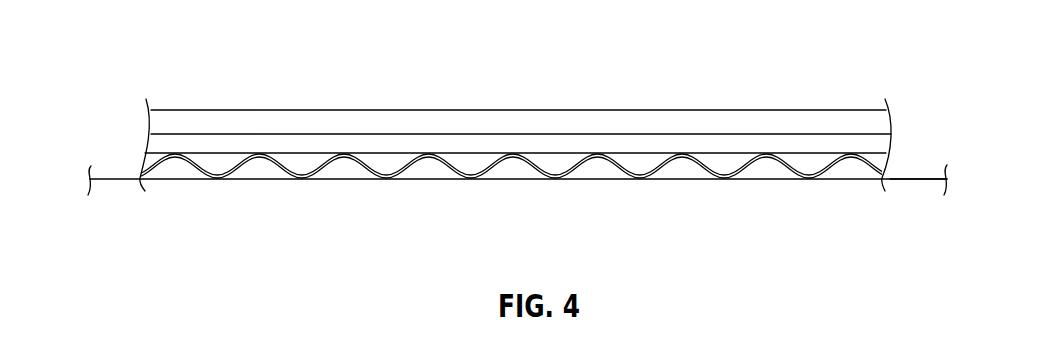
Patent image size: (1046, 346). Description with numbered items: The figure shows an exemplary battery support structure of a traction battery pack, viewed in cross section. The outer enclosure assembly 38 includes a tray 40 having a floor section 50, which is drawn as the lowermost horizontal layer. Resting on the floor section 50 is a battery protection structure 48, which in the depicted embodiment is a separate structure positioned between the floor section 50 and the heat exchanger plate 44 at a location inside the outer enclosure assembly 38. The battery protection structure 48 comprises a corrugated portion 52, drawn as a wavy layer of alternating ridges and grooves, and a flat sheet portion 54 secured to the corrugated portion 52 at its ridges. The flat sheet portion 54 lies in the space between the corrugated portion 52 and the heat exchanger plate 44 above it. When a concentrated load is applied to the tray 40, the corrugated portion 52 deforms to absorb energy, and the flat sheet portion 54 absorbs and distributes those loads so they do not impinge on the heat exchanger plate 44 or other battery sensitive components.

The outer enclosure assembly 38 is at (298, 221).
The tray 40 is at (108, 182).
The heat exchanger plate 44 is at (515, 112).
The battery protection structure 48 is at (118, 154).
The floor section 50 is at (910, 178).
The corrugated portion 52 is at (447, 168).
The flat sheet portion 54 is at (448, 157).